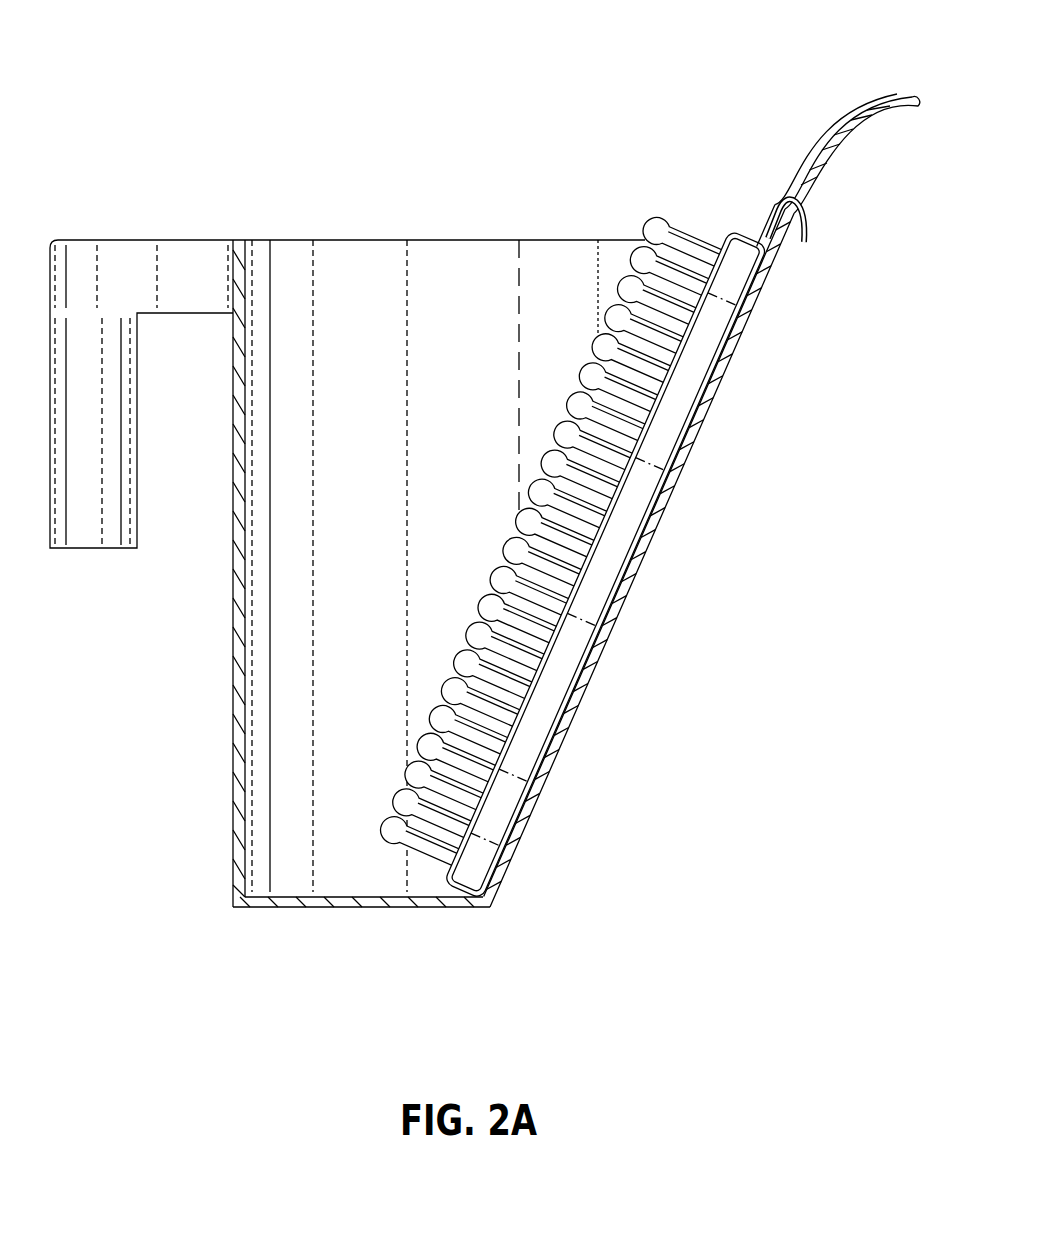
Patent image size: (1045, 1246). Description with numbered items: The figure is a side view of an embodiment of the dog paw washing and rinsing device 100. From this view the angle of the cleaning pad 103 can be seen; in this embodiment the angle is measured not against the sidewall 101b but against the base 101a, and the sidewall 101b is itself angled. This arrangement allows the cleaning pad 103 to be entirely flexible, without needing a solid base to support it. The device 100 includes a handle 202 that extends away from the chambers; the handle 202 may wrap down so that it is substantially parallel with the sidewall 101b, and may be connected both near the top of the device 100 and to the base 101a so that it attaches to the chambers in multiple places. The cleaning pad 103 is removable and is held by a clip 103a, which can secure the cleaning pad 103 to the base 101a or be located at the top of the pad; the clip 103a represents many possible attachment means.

The dog paw washing and rinsing device 100 is at (258, 110).
The handle 202 is at (91, 548).
The base 101a is at (457, 907).
The sidewall 101b is at (603, 652).
The cleaning pad 103 is at (623, 503).
The clip 103a is at (808, 207).